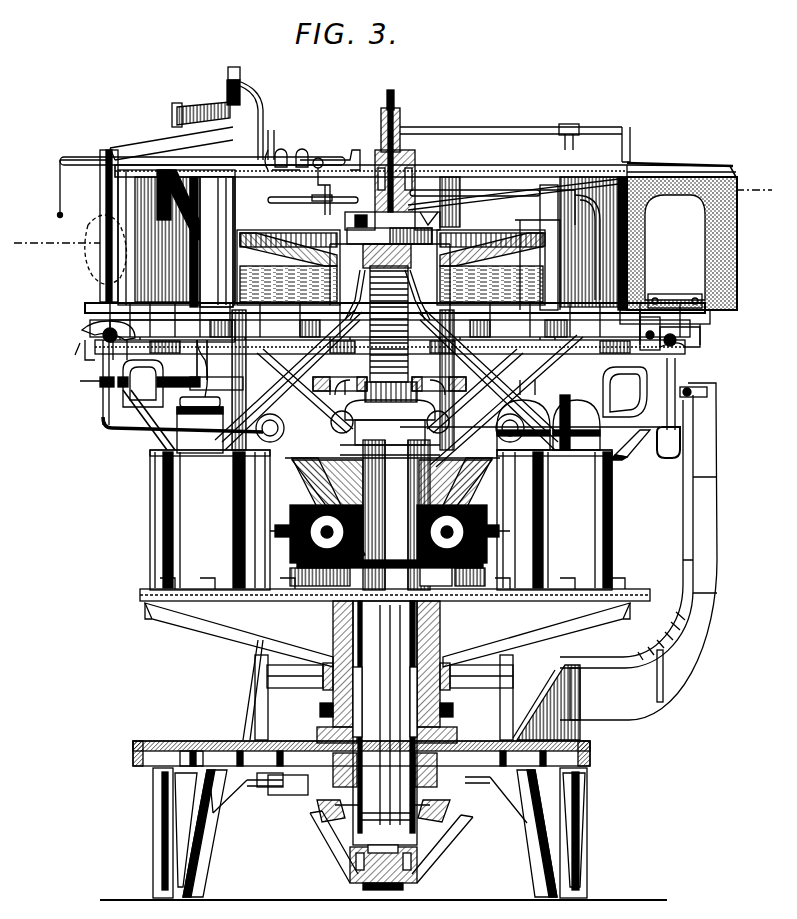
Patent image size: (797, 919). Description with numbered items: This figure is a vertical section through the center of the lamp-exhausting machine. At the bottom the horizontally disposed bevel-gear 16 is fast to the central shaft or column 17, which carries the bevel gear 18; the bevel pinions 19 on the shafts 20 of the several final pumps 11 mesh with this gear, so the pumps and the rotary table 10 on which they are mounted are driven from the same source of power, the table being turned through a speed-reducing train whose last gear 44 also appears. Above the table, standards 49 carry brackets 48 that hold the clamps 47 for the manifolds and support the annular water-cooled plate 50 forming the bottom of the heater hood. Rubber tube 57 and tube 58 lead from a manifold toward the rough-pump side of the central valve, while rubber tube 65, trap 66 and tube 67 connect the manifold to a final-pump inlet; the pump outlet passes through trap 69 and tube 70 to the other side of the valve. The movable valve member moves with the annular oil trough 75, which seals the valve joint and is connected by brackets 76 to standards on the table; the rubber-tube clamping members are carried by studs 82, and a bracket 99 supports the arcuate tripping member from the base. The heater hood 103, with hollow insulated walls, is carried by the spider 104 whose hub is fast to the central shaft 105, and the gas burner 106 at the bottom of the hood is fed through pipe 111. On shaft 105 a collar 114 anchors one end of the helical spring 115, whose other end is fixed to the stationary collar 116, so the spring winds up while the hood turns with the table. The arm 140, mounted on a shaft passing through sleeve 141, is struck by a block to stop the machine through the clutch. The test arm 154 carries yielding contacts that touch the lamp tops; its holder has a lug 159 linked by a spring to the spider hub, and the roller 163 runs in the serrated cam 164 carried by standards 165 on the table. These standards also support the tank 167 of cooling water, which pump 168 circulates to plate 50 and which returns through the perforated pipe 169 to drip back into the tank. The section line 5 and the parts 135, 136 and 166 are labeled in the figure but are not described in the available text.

The section line 5 is at (391, 232).
The rotary table 10 is at (147, 597).
The final pumps 11 is at (163, 507).
The bevel-gear 16 is at (433, 810).
The central shaft or column 17 is at (420, 837).
The bevel gear 18 is at (327, 600).
The bevel pinions 19 is at (467, 517).
The shafts 20 is at (500, 528).
The gear 44 is at (487, 680).
The clamps 47 is at (80, 328).
The brackets 48 is at (693, 360).
The standards 49 is at (628, 422).
The annular water cooled plate 50 is at (697, 317).
The rubber tube 57 is at (100, 403).
The tube 58 is at (125, 423).
The rubber tube 65 is at (690, 400).
The trap 66 is at (680, 443).
The tube 67 is at (638, 440).
The trap 69 is at (563, 280).
The tube 70 is at (397, 408).
The annular trough 75 is at (323, 483).
The brackets 76 is at (523, 440).
The studs 82 is at (340, 383).
The bracket 99 is at (708, 537).
The hood 103 is at (730, 243).
The spider 104 is at (492, 164).
The central shaft 105 is at (405, 166).
The gas burner 106 is at (663, 298).
The pipe 111 is at (513, 130).
The collar 114 is at (408, 273).
The helical spring 115 is at (398, 370).
The stationary collar 116 is at (403, 403).
The rod 135 is at (147, 153).
The bracket 136 is at (214, 112).
The arm 140 is at (253, 643).
The sleeve 141 is at (253, 697).
The arm 154 is at (273, 158).
The lug 159 is at (347, 157).
The roller 163 is at (346, 220).
The serrated cam member 164 is at (433, 223).
The standards 165 is at (417, 310).
The bracket 166 is at (58, 197).
The tank 167 is at (377, 266).
The pump 168 is at (387, 573).
The perforated pipe 169 is at (290, 207).